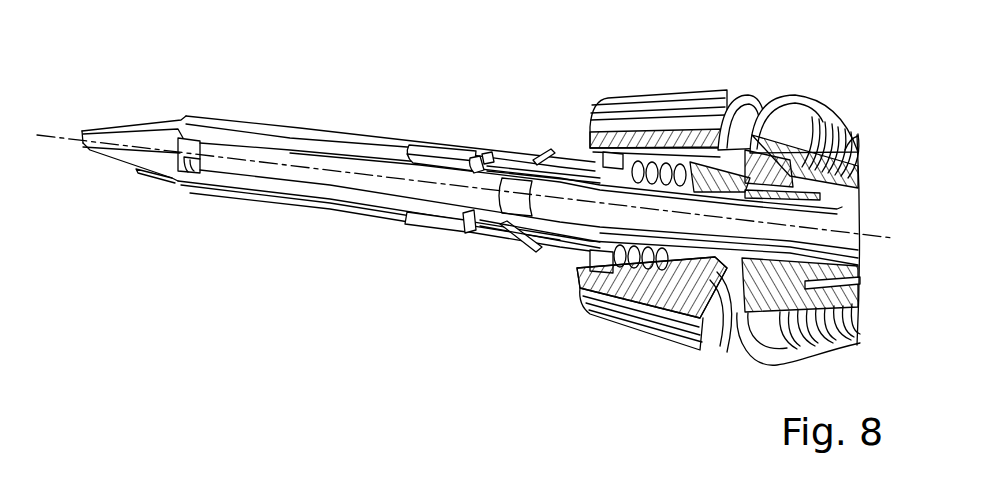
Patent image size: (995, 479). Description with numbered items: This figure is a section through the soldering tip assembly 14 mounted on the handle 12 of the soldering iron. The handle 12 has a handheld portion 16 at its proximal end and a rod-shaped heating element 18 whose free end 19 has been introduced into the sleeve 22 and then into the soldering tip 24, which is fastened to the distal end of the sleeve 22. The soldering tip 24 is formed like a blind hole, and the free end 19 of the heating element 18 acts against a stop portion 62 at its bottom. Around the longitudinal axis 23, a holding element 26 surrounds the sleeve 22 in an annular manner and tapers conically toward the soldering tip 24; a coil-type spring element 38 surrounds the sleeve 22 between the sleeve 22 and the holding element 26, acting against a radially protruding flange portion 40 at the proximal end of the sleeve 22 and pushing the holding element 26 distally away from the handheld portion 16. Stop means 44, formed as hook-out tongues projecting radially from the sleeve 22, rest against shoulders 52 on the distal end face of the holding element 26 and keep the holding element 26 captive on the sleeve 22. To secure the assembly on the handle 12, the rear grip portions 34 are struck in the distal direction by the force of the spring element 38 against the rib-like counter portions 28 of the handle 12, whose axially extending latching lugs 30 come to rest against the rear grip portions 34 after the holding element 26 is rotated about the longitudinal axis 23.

The handle 12 is at (833, 127).
The soldering tip assembly 14 is at (299, 112).
The handheld portion 16 is at (846, 135).
The heating element 18 is at (323, 162).
The free end 19 is at (186, 158).
The sleeve 22 is at (650, 170).
The longitudinal axis 23 is at (68, 139).
The soldering tip 24 is at (246, 195).
The holding element 26 is at (730, 93).
The counter portions 28 is at (710, 265).
The latching lugs 30 is at (652, 287).
The rear grip portions 34 is at (757, 167).
The spring element 38 is at (658, 170).
The flange portion 40 is at (687, 173).
The stop means 44 is at (538, 148).
The shoulders 52 is at (610, 163).
The stop portion 62 is at (183, 158).